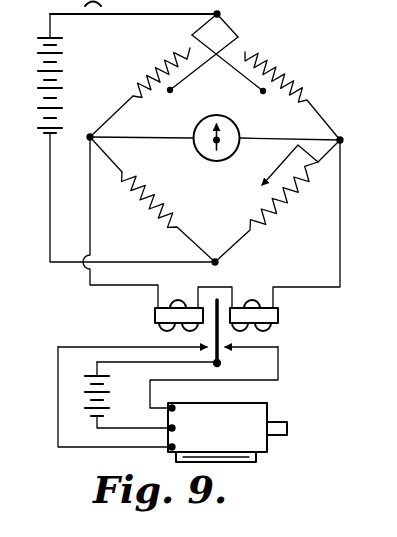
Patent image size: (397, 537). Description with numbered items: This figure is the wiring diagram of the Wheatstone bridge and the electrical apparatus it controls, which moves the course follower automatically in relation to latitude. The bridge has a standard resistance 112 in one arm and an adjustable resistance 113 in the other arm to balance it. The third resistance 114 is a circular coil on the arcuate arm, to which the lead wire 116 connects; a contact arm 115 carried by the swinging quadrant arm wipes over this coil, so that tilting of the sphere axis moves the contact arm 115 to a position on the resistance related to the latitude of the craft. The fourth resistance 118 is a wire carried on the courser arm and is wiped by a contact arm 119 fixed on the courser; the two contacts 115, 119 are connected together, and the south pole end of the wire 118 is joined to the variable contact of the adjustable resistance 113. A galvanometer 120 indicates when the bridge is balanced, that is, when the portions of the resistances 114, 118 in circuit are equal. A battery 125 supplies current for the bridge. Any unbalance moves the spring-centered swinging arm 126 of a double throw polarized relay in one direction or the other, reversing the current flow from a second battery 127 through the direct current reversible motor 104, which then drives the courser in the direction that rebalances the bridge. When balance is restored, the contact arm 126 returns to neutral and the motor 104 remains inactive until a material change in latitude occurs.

The direct current reversible motor 104 is at (227, 432).
The standard resistance 112 is at (150, 222).
The adjustable resistance 113 is at (278, 215).
The third resistance 114 is at (146, 66).
The contact arm 115 is at (170, 91).
The lead wire 116 is at (124, 99).
The fourth resistance 118 is at (302, 62).
The contact arm 119 is at (265, 93).
The galvanometer 120 is at (194, 130).
The battery 125 is at (57, 61).
The swinging arm of double throw polarized relay 126 is at (222, 346).
The battery 127 is at (102, 401).